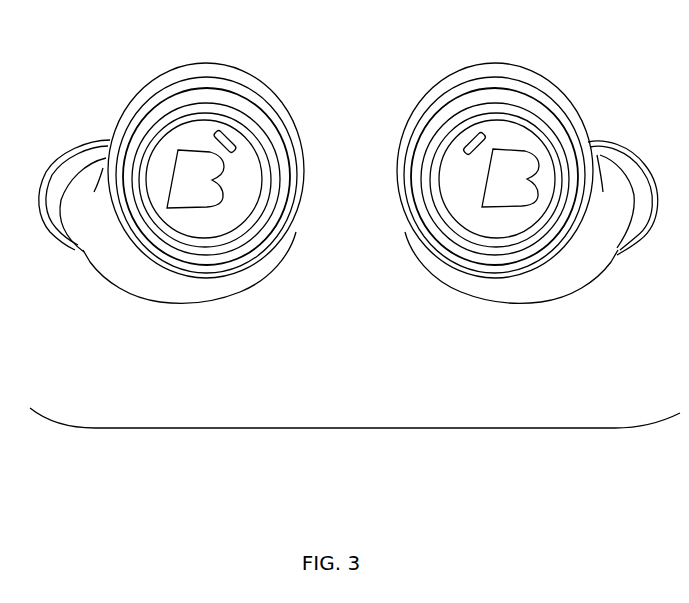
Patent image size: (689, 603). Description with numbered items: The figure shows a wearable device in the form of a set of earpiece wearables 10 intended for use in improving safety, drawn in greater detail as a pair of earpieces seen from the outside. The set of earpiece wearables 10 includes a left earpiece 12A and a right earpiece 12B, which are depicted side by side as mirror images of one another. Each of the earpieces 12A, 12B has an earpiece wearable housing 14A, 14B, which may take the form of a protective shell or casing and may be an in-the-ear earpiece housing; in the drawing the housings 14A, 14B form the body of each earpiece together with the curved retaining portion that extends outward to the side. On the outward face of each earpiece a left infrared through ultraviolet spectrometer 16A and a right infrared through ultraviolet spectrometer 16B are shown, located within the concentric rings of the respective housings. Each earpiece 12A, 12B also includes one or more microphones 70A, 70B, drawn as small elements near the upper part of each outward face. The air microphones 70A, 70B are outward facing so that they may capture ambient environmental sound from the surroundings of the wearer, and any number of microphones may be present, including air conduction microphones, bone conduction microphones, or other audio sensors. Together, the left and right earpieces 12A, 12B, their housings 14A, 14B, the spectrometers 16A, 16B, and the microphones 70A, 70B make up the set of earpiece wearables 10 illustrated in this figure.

The set of earpiece wearables 10 is at (345, 432).
The left earpiece 12A is at (206, 157).
The right earpiece 12B is at (495, 161).
The earpiece wearable housing 14A is at (179, 222).
The earpiece wearable housing 14B is at (531, 226).
The left infrared through ultraviolet spectrometer 16A is at (166, 154).
The right infrared through ultraviolet spectrometer 16B is at (529, 158).
The air microphone 70A is at (284, 141).
The air microphone 70B is at (420, 117).